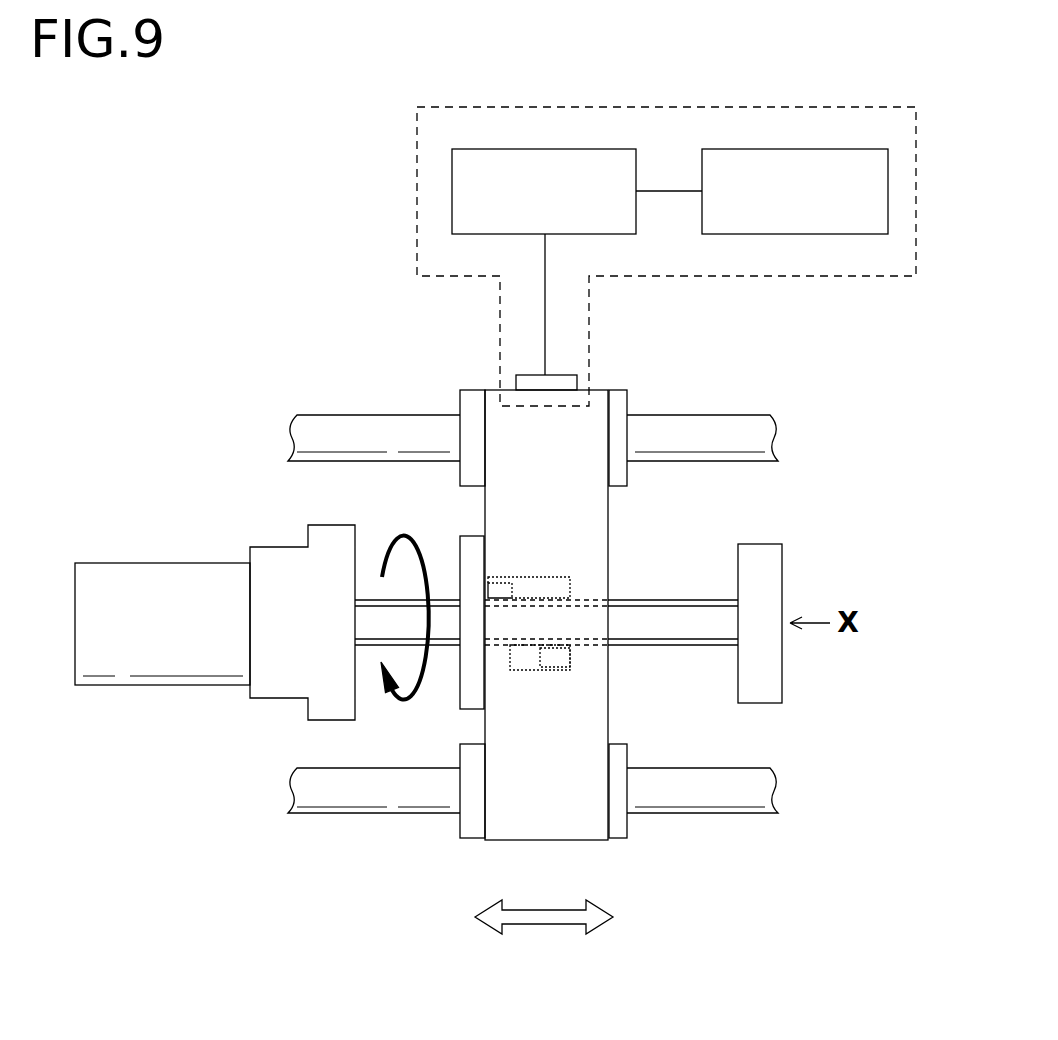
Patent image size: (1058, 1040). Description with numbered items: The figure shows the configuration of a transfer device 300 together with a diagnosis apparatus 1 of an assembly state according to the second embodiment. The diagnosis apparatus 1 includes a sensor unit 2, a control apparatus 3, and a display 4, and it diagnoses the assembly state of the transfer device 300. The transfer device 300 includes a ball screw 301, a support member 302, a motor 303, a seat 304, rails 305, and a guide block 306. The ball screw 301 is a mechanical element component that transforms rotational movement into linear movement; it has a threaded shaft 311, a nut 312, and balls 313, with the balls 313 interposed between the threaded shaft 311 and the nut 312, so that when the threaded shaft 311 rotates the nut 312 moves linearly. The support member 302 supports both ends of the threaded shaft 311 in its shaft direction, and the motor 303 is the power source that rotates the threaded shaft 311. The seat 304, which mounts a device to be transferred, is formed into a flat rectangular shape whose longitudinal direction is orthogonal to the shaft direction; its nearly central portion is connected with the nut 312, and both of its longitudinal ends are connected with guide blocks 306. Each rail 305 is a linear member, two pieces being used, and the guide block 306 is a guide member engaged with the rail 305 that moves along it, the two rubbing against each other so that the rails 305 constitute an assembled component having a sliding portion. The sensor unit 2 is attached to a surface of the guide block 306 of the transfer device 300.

The diagnosis apparatus 1 is at (685, 107).
The sensor unit 2 is at (528, 383).
The control apparatus 3 is at (597, 149).
The display 4 is at (850, 149).
The transfer device 300 is at (208, 421).
The ball screw 301 is at (473, 620).
The support member 302 is at (278, 687).
The motor 303 is at (128, 662).
The seat 304 is at (592, 400).
The rail 305 is at (751, 436).
The guide block 306 is at (618, 400).
The threaded shaft 311 is at (370, 642).
The nut 312 is at (577, 588).
The balls 313 is at (485, 590).